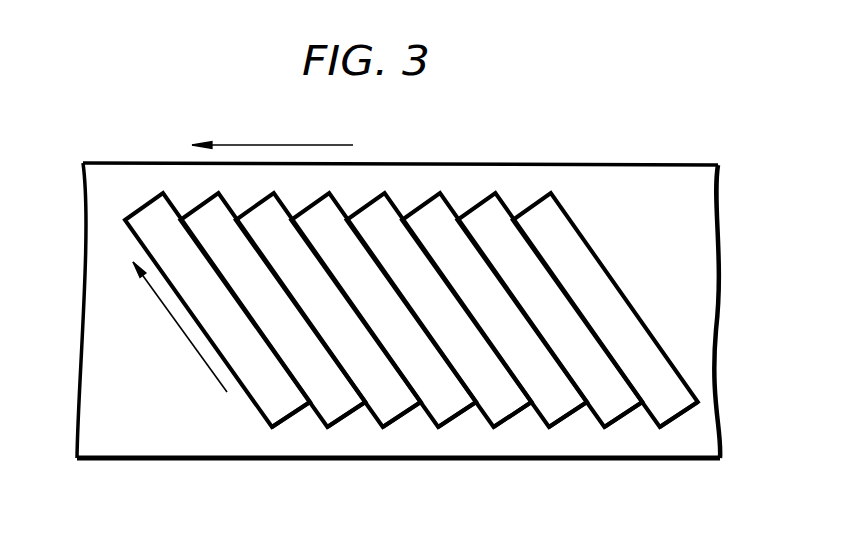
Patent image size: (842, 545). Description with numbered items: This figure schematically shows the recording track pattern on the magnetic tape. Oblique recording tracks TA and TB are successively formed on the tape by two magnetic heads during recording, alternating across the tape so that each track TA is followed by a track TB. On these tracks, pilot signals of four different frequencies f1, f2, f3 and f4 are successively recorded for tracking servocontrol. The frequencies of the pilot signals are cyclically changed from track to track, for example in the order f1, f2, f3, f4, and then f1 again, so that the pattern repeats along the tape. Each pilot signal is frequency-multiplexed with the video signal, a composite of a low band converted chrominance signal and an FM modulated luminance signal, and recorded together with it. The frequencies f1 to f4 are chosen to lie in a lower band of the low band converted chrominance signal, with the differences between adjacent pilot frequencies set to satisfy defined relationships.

The first pilot signal frequency f1 is at (383, 310).
The second pilot signal frequency f2 is at (439, 310).
The third pilot signal frequency f3 is at (494, 310).
The fourth pilot signal frequency f4 is at (328, 310).
The oblique recording track TA is at (342, 414).
The oblique recording track TB is at (287, 414).